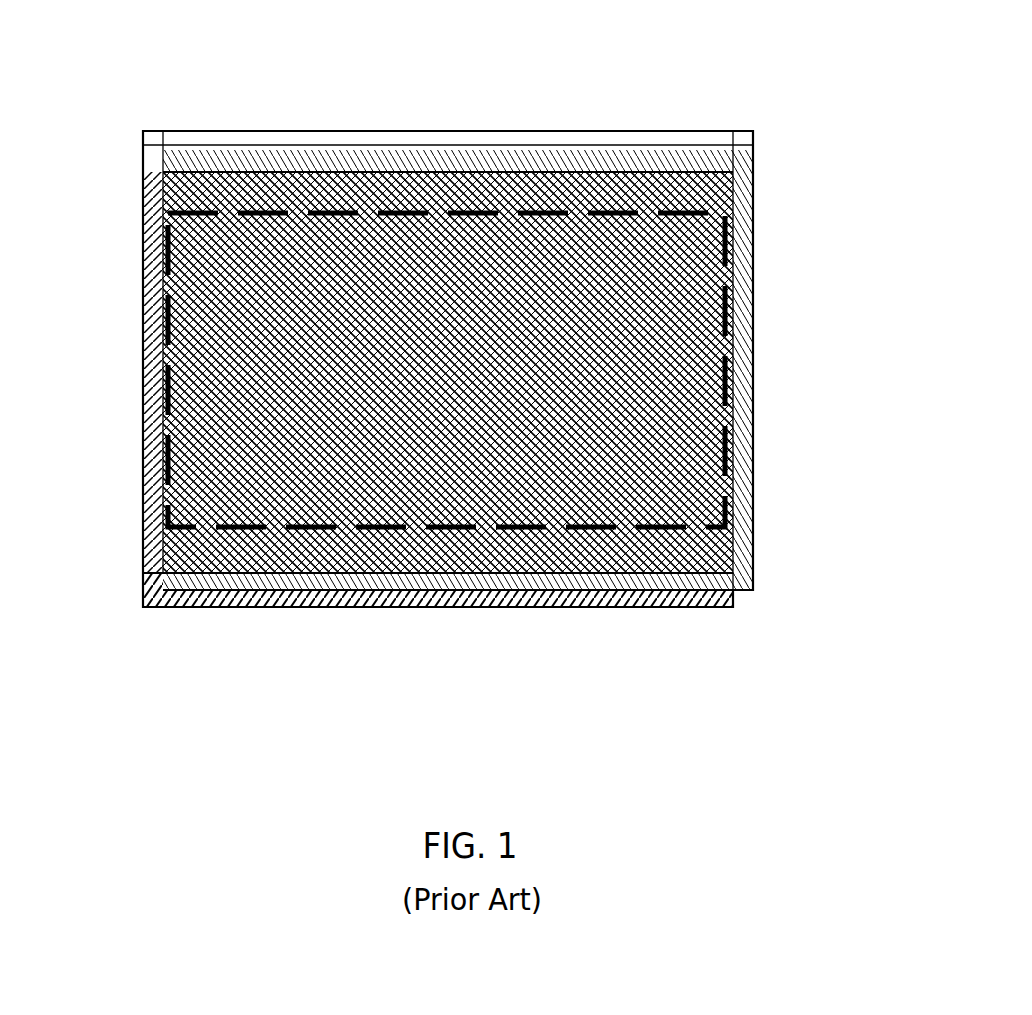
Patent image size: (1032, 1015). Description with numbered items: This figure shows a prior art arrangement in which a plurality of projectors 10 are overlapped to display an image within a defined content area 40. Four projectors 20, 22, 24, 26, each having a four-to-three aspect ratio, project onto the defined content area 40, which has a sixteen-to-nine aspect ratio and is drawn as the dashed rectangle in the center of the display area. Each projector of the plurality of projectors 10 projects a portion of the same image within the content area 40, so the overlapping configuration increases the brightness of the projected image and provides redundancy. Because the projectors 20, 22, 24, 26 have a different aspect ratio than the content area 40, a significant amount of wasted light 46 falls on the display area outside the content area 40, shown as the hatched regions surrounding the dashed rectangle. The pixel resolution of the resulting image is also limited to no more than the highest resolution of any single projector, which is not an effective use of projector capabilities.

The plurality of projectors 10 is at (809, 88).
The projector 20 is at (143, 150).
The projector 22 is at (753, 137).
The projector 24 is at (756, 585).
The projector 26 is at (143, 603).
The defined content area 40 is at (343, 213).
The wasted light 46 is at (537, 548).